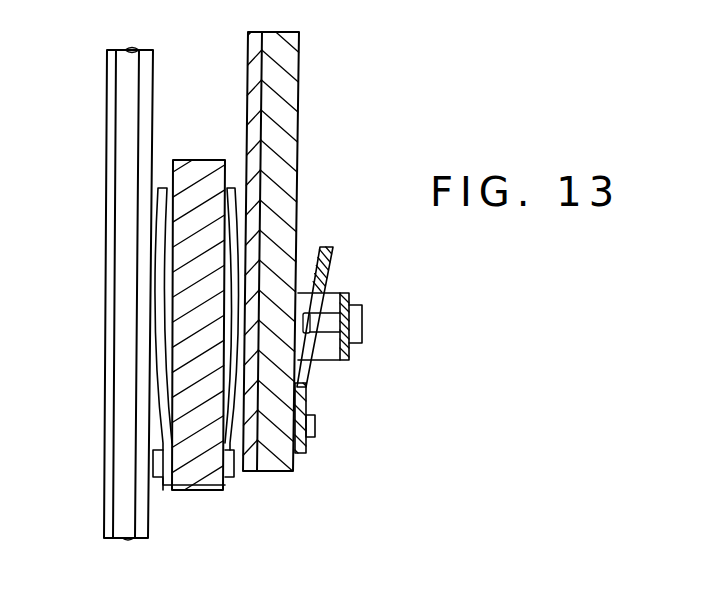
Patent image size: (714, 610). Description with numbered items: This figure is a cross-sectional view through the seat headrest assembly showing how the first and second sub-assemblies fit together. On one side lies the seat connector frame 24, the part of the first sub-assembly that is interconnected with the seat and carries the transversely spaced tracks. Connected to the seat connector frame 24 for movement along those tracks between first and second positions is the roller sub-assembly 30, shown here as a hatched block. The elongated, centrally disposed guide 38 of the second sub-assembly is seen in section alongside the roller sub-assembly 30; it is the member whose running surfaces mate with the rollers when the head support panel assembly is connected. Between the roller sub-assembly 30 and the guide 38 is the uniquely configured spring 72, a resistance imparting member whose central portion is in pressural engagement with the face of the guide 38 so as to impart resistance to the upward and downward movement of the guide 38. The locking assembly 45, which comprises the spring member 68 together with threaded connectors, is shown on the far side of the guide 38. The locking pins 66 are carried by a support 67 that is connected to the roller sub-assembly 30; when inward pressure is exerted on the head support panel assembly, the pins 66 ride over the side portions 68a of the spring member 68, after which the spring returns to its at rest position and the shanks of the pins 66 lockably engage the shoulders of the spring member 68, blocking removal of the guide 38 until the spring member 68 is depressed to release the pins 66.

The seat connector frame 24 is at (102, 169).
The guide 38 is at (123, 289).
The roller sub-assembly 30 is at (197, 171).
The spring 72 is at (233, 197).
The spring member 68 is at (334, 256).
The side portions 68a is at (313, 348).
The locking pins 66 is at (330, 324).
The support 67 is at (350, 353).
The locking assembly 45 is at (316, 429).